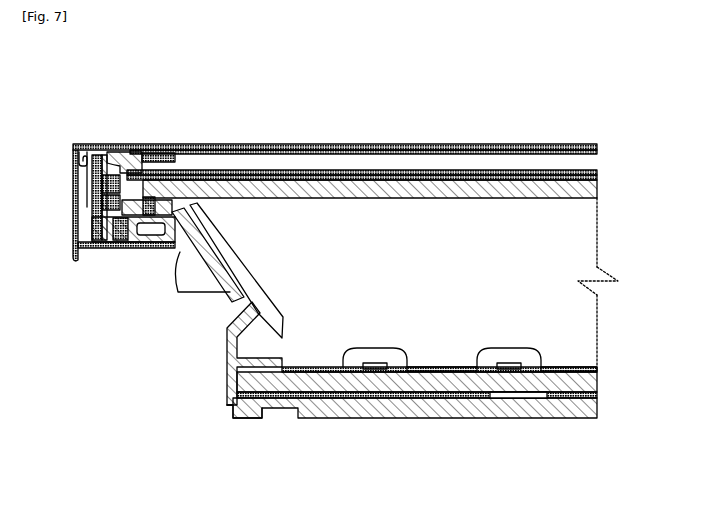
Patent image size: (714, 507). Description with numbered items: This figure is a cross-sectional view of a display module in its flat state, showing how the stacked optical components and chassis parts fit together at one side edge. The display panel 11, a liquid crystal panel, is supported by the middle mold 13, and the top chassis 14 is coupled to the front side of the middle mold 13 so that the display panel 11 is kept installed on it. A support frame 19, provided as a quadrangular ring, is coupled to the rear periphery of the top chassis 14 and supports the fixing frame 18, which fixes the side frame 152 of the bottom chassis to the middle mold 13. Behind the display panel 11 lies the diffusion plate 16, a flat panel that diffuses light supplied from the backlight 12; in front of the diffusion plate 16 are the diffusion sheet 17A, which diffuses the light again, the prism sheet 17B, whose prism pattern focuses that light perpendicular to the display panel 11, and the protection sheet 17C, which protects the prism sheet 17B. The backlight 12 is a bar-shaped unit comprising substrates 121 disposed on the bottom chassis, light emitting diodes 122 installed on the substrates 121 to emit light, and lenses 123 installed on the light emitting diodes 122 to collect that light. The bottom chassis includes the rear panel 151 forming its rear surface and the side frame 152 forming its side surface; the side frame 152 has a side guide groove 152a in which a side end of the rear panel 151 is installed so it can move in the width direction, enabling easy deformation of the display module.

The display panel 11 is at (305, 140).
The backlight 12 is at (415, 340).
The middle mold 13 is at (128, 151).
The top chassis 14 is at (105, 143).
The diffusion plate 16 is at (597, 192).
The diffusion sheet 17A is at (597, 178).
The prism sheet 17B is at (597, 172).
The protection sheet 17C is at (597, 151).
The fixing frame 18 is at (97, 240).
The support frame 19 is at (74, 197).
The substrate 121 is at (437, 368).
The light emitting diode 122 is at (380, 363).
The lens 123 is at (345, 367).
The rear panel 151 is at (333, 392).
The side frame 152 is at (182, 288).
The side guide groove 152a is at (247, 408).